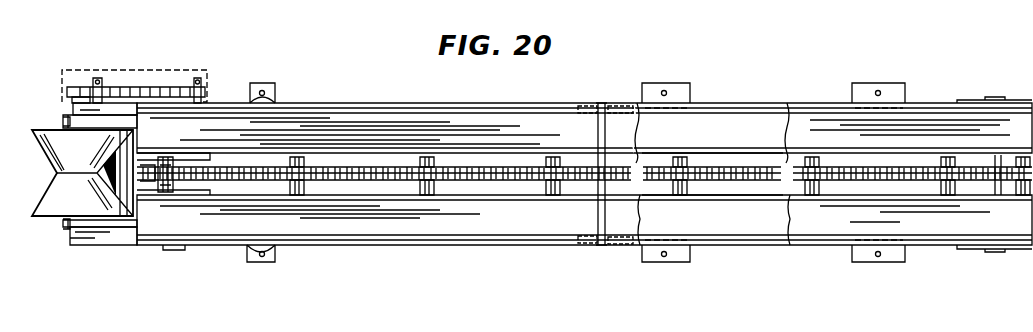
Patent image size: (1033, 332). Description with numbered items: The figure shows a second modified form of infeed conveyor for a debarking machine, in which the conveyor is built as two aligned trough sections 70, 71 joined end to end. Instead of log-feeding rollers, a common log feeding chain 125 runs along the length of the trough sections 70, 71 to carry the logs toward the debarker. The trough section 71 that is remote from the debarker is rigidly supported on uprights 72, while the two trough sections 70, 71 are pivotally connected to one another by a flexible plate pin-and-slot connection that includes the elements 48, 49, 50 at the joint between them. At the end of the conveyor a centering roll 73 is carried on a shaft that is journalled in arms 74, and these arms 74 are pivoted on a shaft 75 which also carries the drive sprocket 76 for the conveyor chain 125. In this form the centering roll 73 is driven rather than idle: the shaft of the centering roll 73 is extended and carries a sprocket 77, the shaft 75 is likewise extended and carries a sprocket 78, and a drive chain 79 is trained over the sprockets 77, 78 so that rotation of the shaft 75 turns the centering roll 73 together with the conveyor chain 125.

The trough section 70 is at (413, 108).
The trough section 71 is at (758, 108).
The uprights 72 is at (678, 245).
The centering roll 73 is at (58, 190).
The arms 74 is at (63, 121).
The shaft 75 is at (175, 251).
The drive sprocket 76 is at (148, 163).
The sprocket 77 is at (67, 91).
The sprocket 78 is at (185, 87).
The drive chain 79 is at (125, 86).
The pin-and-slot connection element 48 is at (585, 113).
The pin-and-slot connection element 49 is at (598, 104).
The pin-and-slot connection element 50 is at (630, 103).
The log feeding chain 125 is at (477, 167).